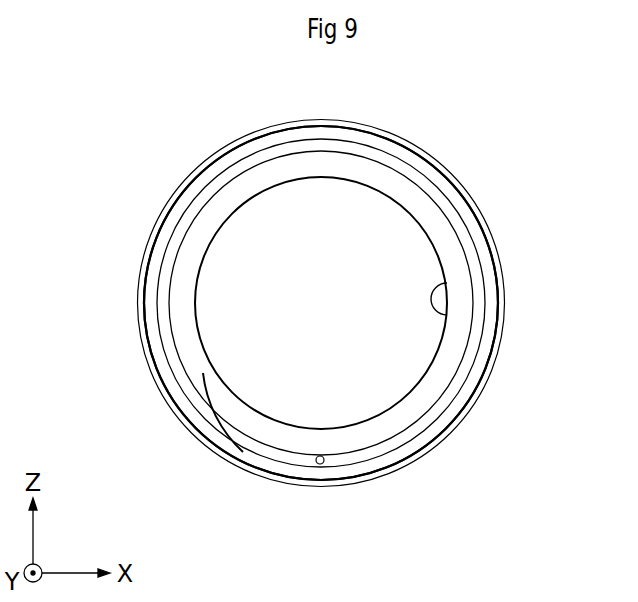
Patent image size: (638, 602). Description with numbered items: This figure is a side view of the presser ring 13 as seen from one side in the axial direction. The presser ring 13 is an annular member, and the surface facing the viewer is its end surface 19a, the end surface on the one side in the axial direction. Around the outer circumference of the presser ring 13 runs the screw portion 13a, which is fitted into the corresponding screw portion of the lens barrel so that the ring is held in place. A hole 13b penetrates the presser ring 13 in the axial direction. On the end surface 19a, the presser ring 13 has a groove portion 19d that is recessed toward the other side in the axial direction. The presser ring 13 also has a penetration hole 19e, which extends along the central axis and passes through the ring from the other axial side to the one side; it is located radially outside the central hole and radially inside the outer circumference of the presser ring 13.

The presser ring 13 is at (482, 213).
The screw portion 13a is at (478, 392).
The hole 13b is at (447, 314).
The end surface 19a is at (203, 373).
The groove portion 19d is at (415, 430).
The penetration hole 19e is at (325, 465).